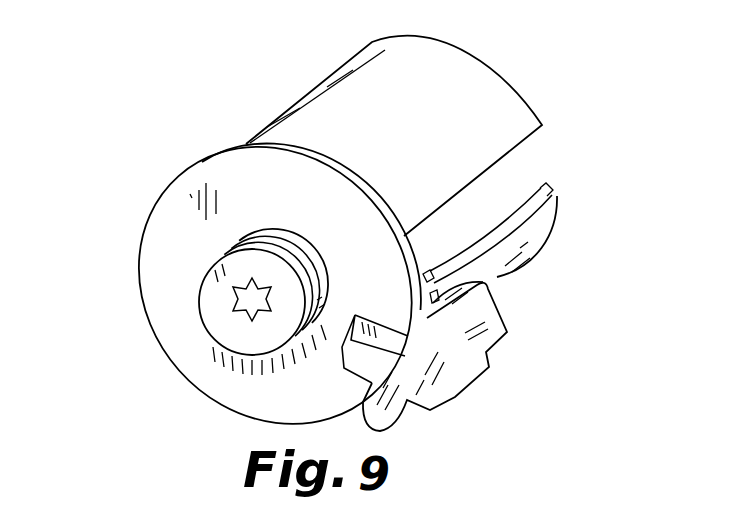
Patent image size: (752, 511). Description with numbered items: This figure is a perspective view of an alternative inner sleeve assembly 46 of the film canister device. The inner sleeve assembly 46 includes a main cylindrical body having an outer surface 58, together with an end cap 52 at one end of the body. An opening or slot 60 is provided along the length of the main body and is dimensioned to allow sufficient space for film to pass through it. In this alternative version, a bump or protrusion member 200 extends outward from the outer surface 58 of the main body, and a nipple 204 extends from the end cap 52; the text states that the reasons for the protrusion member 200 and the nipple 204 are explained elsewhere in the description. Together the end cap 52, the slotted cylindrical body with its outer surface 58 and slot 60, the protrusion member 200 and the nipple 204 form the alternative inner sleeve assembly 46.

The inner sleeve assembly 46 is at (289, 38).
The end cap 52 is at (167, 262).
The outer surface 58 is at (470, 78).
The slot 60 is at (565, 146).
The bump or protrusion member 200 is at (500, 272).
The nipple 204 is at (422, 306).